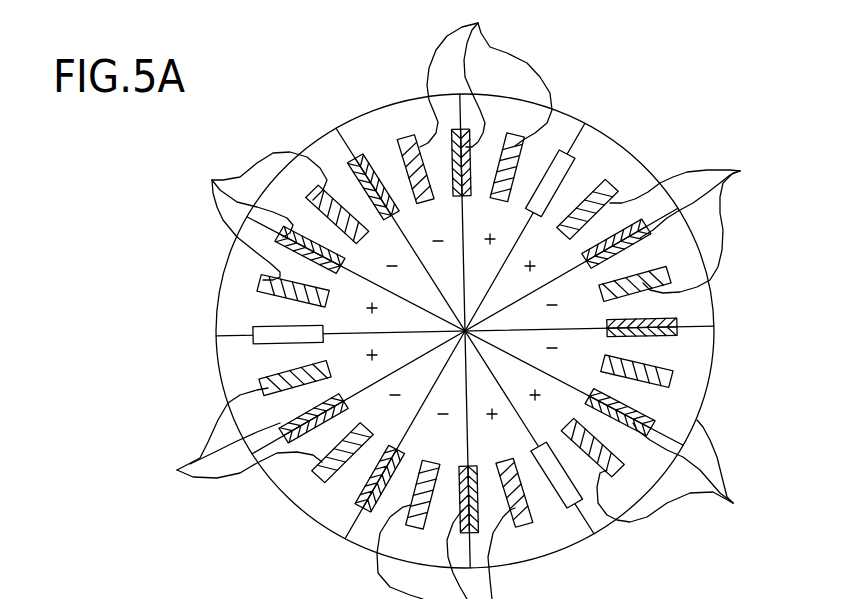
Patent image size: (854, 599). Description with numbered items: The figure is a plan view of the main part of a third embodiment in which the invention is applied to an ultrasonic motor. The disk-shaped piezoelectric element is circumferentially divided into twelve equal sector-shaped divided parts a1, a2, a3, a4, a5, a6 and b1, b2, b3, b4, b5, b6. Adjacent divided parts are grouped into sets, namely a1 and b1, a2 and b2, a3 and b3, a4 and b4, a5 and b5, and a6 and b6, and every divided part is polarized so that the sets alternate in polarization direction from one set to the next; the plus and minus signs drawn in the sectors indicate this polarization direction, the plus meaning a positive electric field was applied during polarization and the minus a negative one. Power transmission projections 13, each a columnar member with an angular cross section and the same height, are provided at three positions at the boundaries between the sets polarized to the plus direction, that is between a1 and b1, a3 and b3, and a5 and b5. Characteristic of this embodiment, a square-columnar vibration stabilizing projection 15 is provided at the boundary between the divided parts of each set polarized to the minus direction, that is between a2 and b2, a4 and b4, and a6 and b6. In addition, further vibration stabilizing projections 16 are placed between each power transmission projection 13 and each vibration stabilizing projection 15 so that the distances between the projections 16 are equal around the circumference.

The power transmission projection 13 is at (574, 165).
The vibration stabilizing projection 15 is at (365, 180).
The vibration stabilizing projection 16 is at (458, 301).
The divided part a1 is at (509, 154).
The divided part a2 is at (648, 280).
The divided part a3 is at (601, 456).
The divided part a4 is at (416, 508).
The divided part a5 is at (279, 377).
The divided part a6 is at (320, 214).
The divided part b1 is at (598, 199).
The divided part b2 is at (650, 380).
The divided part b3 is at (516, 507).
The divided part b4 is at (326, 454).
The divided part b5 is at (279, 281).
The divided part b6 is at (408, 158).